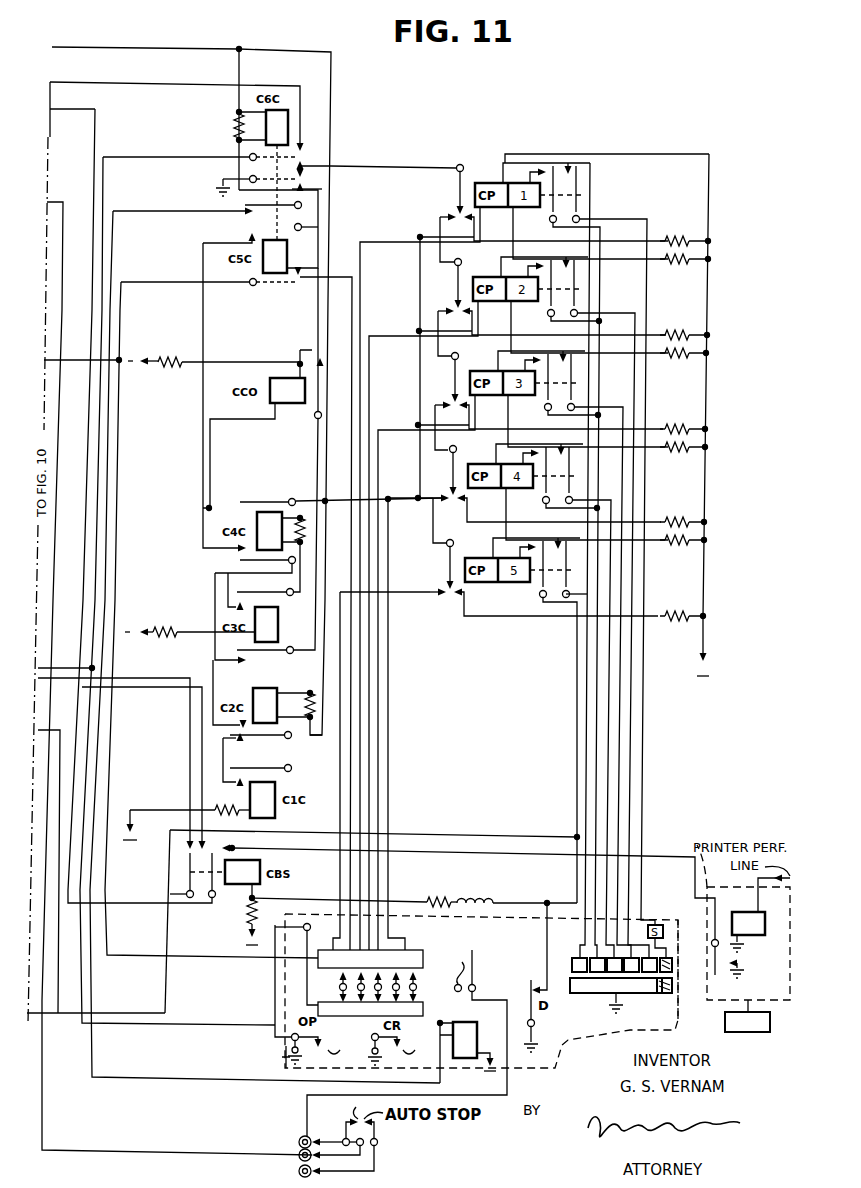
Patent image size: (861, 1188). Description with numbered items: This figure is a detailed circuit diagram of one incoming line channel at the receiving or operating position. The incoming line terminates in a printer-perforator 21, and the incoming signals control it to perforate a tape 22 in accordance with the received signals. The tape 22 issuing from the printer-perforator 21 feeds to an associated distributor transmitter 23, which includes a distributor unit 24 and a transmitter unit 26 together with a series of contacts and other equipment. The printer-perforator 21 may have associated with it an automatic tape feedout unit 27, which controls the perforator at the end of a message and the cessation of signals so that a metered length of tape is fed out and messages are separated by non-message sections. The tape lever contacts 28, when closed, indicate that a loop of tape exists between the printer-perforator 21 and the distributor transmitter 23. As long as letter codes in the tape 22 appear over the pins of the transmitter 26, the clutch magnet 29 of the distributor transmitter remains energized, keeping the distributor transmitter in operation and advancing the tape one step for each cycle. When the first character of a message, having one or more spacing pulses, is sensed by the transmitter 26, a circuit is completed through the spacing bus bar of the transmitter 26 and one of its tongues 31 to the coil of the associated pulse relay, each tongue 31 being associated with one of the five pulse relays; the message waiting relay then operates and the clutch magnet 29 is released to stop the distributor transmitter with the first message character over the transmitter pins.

The printer-perforator 21 is at (782, 994).
The tape 22 is at (692, 958).
The distributor transmitter 23 is at (278, 1063).
The distributor unit 24 is at (573, 990).
The transmitter unit 26 is at (424, 969).
The automatic tape feedout unit 27 is at (760, 1028).
The tape lever contacts 28 is at (476, 976).
The clutch magnet 29 is at (453, 1042).
The tongue 31 is at (339, 989).